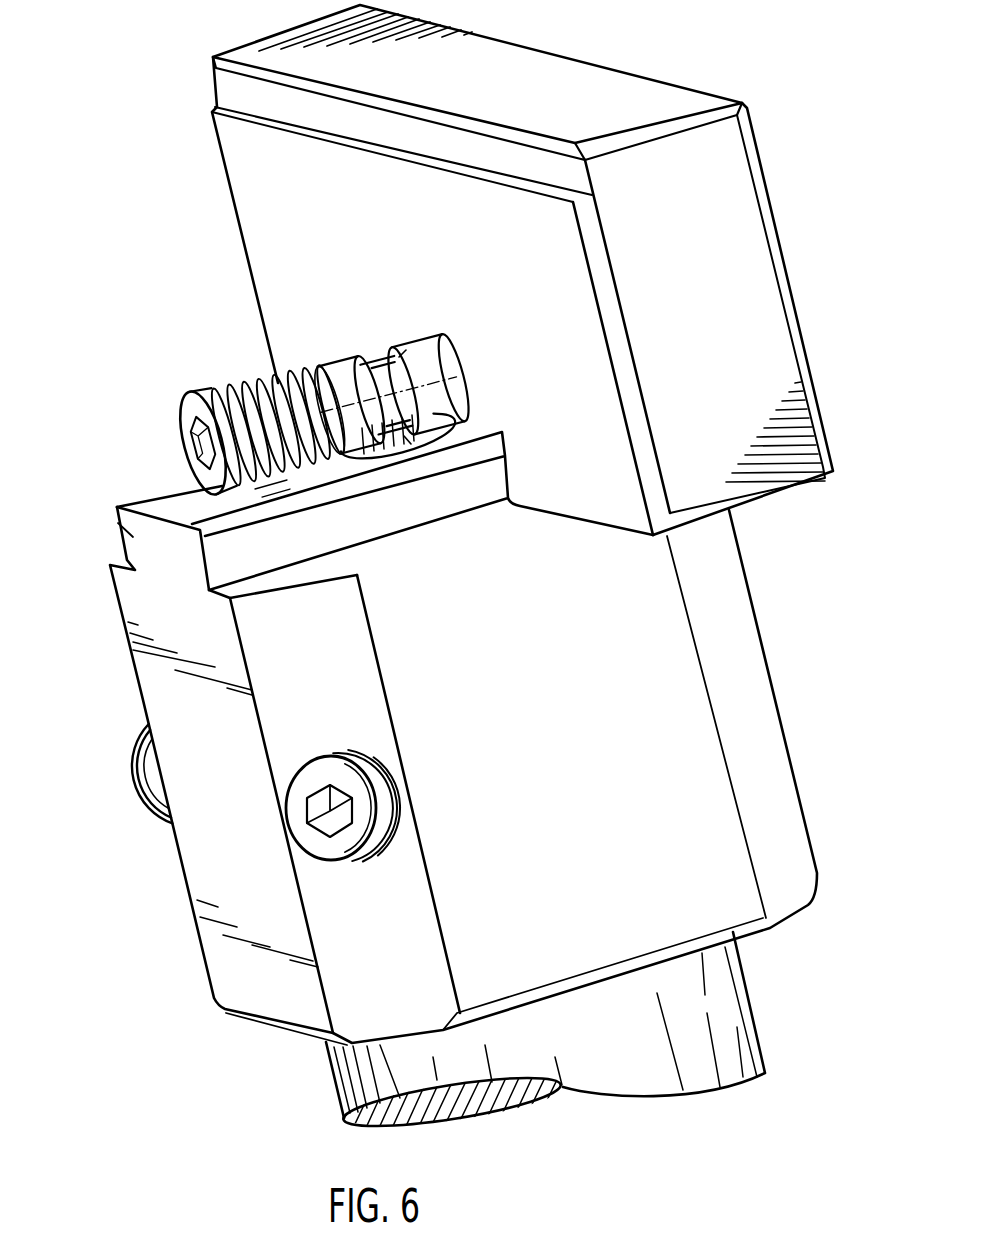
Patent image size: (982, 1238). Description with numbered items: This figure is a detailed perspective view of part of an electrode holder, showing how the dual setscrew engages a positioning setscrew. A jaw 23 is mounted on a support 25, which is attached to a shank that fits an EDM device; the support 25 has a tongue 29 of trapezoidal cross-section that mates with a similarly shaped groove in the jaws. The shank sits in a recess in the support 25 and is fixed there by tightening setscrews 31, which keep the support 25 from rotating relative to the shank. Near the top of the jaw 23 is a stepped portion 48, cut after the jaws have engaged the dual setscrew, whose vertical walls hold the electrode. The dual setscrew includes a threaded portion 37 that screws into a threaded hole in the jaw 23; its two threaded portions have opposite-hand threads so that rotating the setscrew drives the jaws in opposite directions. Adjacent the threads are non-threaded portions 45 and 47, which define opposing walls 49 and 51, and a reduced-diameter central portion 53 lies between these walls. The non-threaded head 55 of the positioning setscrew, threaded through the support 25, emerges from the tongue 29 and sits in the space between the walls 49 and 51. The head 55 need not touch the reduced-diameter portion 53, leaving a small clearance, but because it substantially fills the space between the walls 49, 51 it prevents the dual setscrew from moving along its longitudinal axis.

The jaw 23 is at (548, 270).
The support 25 is at (682, 799).
The tongue 29 is at (116, 512).
The tightening setscrew 31 is at (140, 784).
The threaded portion 37 is at (303, 373).
The non-threaded portion 45 is at (331, 362).
The non-threaded portion 47 is at (436, 336).
The stepped portion 48 is at (553, 173).
The wall 49 is at (357, 365).
The wall 51 is at (401, 355).
The reduced-diameter central portion 53 is at (458, 423).
The head of positioning setscrew 55 is at (407, 440).